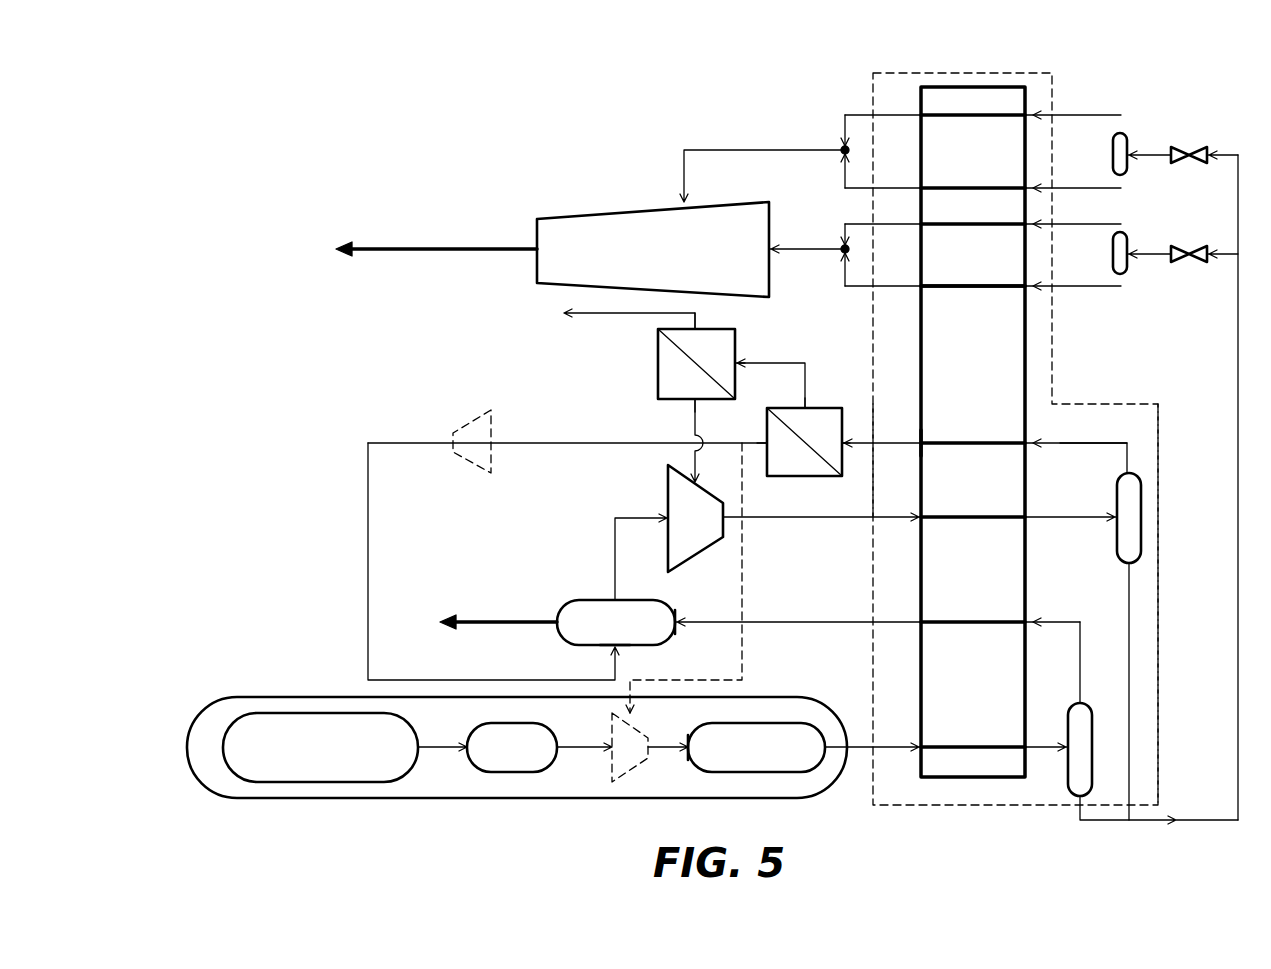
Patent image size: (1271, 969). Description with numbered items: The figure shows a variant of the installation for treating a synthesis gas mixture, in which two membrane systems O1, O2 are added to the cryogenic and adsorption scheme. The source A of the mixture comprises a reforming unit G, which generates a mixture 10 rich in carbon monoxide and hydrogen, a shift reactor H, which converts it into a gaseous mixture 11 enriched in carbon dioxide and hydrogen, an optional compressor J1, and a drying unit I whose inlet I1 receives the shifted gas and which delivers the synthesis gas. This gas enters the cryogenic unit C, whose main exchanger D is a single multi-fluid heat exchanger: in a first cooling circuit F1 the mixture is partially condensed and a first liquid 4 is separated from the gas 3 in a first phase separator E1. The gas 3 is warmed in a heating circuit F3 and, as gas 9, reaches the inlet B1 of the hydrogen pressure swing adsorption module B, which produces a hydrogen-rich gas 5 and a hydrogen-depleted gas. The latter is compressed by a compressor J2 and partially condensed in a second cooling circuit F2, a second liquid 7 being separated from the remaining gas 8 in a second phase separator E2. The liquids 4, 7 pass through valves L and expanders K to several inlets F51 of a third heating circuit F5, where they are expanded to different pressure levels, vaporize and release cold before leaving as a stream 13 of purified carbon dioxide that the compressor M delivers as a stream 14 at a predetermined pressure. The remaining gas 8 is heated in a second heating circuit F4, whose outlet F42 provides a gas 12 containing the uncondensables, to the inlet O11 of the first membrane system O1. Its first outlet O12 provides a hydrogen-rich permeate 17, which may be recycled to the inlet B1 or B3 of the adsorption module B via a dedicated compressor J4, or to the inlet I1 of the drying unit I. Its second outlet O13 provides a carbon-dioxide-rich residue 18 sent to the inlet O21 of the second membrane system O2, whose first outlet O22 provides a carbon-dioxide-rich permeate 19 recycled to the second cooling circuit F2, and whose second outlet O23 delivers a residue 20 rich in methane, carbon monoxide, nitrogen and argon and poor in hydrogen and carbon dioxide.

The source of mixture A is at (262, 802).
The reforming unit G is at (327, 756).
The shift reactor H is at (520, 756).
The drying unit I is at (761, 756).
The compressor J1 is at (640, 756).
The compressor J2 is at (705, 529).
The dedicated compressor J4 is at (484, 454).
The pressure swing adsorption module for hydrogen B is at (627, 632).
The inlet of the PSA B1 is at (673, 612).
The inlet of the PSA B3 is at (608, 647).
The cryogenic unit C is at (1160, 590).
The main exchanger D is at (955, 782).
The first phase separator E1 is at (1082, 752).
The second phase separator E2 is at (1130, 520).
The first cooling circuit F1 is at (940, 742).
The second cooling circuit F2 is at (950, 514).
The heating circuit F3 is at (993, 618).
The second heating circuit F4 is at (950, 438).
The outlet of the second heating circuit F42 is at (918, 441).
The third heating circuit F5 is at (990, 123).
The inlets of the third heating circuit F51 is at (1000, 290).
The expanders K is at (1128, 132).
The valves L is at (1185, 145).
The compressor M is at (662, 259).
The first membrane system O1 is at (836, 435).
The inlet of the first membrane system O11 is at (848, 440).
The first outlet of the first membrane system O12 is at (763, 440).
The second outlet of the first membrane system O13 is at (805, 405).
The second membrane system O2 is at (699, 386).
The inlet of the second membrane system O21 is at (738, 362).
The first outlet of the second membrane system O22 is at (692, 401).
The second outlet of the second membrane system O23 is at (693, 321).
The inlet of the drying unit I1 is at (692, 760).
The gas 3 is at (1057, 620).
The first liquid 4 is at (1100, 822).
The hydrogen-rich gas 5 is at (512, 616).
The second liquid 7 is at (1130, 632).
The remaining gas 8 is at (1078, 442).
The gas 9 is at (806, 620).
The mixture rich in CO and hydrogen 10 is at (432, 752).
The gaseous mixture enriched in CO2 and hydrogen 11 is at (573, 752).
The gas containing uncondensables 12 is at (900, 448).
The stream of purified CO2 13 is at (752, 155).
The stream of purified CO2 14 is at (442, 254).
The hydrogen-rich permeate 17 is at (755, 448).
The CO2-rich residue 18 is at (793, 360).
The CO2-rich permeate 19 is at (697, 427).
The residue 20 is at (600, 322).